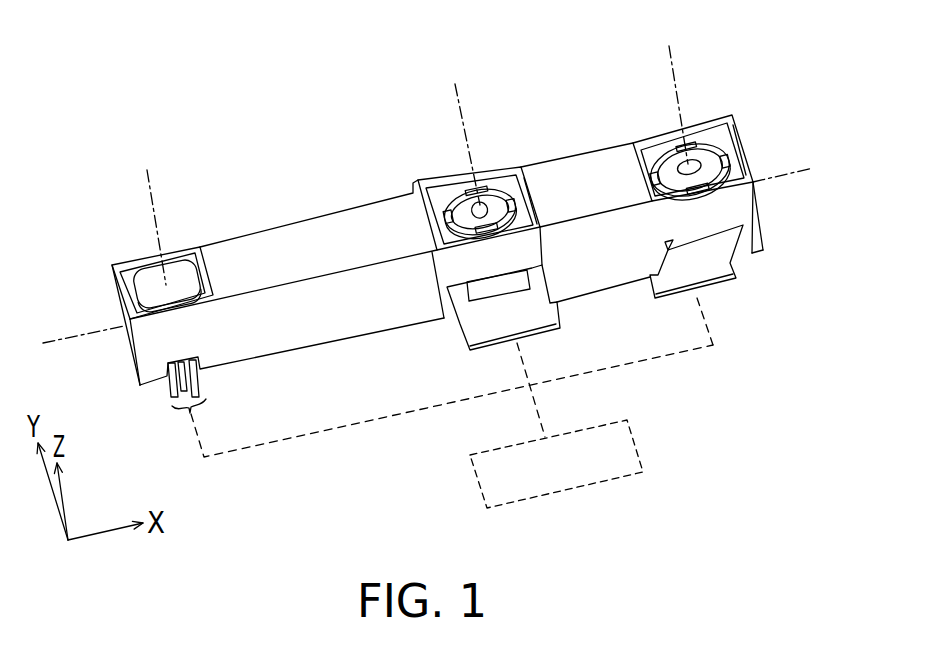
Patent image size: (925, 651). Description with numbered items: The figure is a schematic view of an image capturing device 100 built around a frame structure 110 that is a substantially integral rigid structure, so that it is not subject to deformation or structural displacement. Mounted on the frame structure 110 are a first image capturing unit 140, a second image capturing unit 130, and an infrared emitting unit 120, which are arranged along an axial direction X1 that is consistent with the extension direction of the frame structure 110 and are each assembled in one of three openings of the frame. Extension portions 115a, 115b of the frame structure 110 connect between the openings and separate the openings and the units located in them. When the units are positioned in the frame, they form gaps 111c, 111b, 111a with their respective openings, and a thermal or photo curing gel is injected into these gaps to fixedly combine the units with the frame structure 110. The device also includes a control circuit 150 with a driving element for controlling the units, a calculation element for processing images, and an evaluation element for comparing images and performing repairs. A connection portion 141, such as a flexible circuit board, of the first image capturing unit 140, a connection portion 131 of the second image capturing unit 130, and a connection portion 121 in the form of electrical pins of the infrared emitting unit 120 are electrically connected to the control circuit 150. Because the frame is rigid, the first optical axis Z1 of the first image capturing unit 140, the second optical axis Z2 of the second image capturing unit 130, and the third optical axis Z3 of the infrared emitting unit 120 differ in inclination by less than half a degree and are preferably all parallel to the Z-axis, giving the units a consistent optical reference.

The image capturing device 100 is at (828, 29).
The frame structure 110 is at (312, 112).
The gap 111a is at (126, 266).
The gap 111b is at (424, 197).
The gap 111c is at (643, 149).
The extension portion 115a is at (337, 227).
The extension portion 115b is at (575, 172).
The infrared emitting unit 120 is at (186, 275).
The connection portion 121 is at (199, 382).
The second image capturing unit 130 is at (493, 200).
The connection portion 131 is at (550, 317).
The first image capturing unit 140 is at (710, 145).
The connection portion 141 is at (727, 269).
The control circuit 150 is at (633, 443).
The first optical axis Z1 is at (671, 89).
The second optical axis Z2 is at (462, 128).
The third optical axis Z3 is at (149, 210).
The axial direction X1 is at (442, 246).